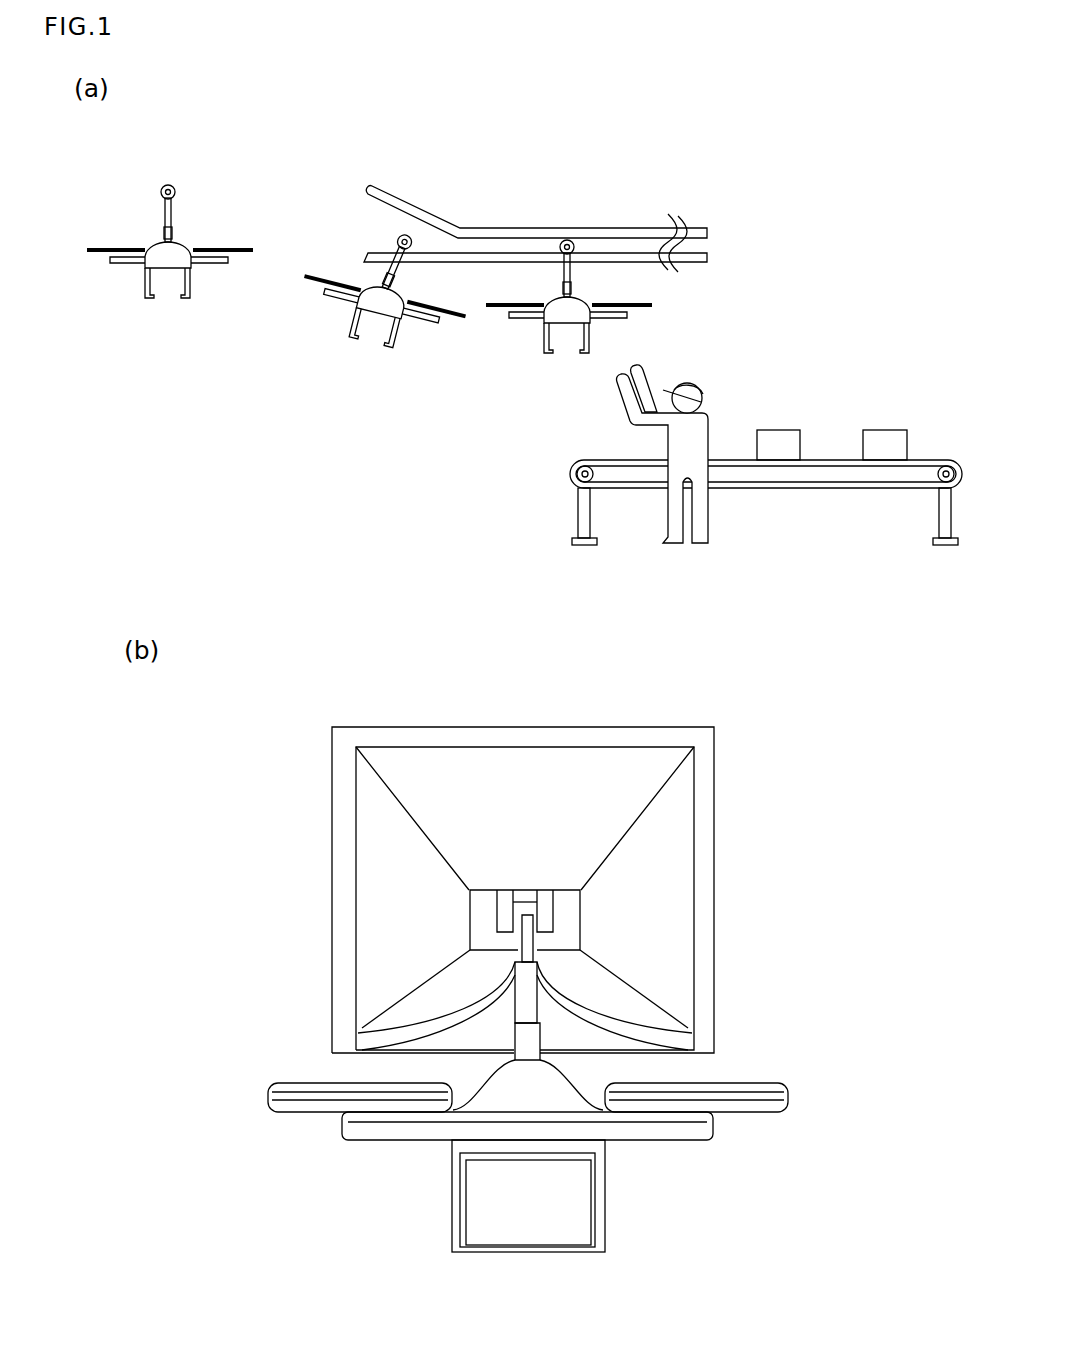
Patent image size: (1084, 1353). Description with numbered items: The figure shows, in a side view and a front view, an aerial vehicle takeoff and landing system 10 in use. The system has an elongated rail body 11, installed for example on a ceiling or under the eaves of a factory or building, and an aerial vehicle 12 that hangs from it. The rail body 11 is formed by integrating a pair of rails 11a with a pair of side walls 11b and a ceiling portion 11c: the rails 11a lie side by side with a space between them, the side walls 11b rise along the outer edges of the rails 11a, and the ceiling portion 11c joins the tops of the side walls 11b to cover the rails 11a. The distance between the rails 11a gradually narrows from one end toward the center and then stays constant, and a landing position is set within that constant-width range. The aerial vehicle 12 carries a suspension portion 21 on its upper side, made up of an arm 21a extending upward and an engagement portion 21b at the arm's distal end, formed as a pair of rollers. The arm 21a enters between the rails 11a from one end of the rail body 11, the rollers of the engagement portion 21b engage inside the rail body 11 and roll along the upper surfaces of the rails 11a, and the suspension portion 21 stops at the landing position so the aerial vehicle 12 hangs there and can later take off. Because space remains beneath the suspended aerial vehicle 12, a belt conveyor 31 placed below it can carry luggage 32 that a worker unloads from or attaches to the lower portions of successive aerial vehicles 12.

The aerial vehicle takeoff and landing system 10 is at (693, 143).
The rail body 11 is at (485, 255).
The rails 11a is at (430, 255).
The side walls 11b is at (347, 895).
The ceiling portion 11c is at (595, 232).
The aerial vehicle 12 is at (143, 268).
The suspension portion 21 is at (175, 215).
The arm 21a is at (522, 946).
The engagement portion 21b is at (498, 908).
The belt conveyor 31 is at (560, 475).
The luggage 32 is at (880, 430).